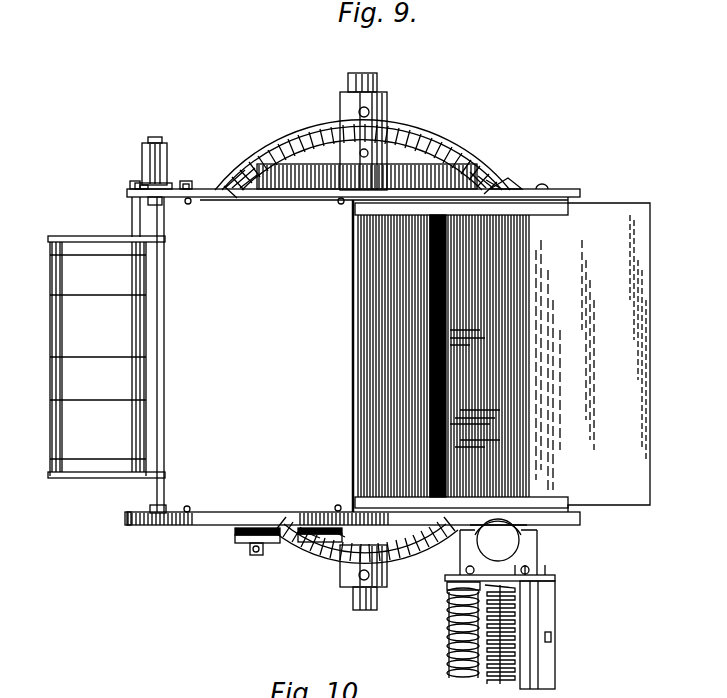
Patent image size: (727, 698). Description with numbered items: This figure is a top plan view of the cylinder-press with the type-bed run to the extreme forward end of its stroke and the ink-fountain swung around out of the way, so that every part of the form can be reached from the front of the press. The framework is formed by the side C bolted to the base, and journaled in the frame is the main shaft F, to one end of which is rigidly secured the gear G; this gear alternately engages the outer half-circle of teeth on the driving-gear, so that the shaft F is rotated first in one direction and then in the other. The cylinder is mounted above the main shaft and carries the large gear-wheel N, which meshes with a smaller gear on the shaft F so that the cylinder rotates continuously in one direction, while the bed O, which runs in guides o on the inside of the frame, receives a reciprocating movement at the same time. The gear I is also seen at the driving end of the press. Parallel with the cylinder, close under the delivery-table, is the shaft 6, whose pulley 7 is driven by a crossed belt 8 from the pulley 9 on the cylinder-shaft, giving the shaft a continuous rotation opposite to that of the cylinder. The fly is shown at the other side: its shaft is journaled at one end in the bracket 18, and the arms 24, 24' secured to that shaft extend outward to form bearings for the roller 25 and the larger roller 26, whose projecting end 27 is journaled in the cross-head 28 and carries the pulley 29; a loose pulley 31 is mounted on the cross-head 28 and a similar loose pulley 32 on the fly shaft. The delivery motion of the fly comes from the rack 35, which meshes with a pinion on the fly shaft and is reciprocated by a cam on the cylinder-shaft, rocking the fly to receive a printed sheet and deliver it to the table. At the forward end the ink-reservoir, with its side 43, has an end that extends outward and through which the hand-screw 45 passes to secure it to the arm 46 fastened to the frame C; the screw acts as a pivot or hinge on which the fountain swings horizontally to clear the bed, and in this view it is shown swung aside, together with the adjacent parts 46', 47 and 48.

The side C is at (572, 197).
The bed O is at (612, 337).
The main shaft F is at (456, 356).
The guide o is at (544, 205).
The gear segment I is at (323, 150).
The gear G is at (418, 165).
The gear-wheel N is at (455, 172).
The bracket 46' is at (512, 166).
The stud 47 is at (540, 189).
The bracket 18 is at (166, 163).
The pulley 29 is at (126, 178).
The loose pulley 32 is at (160, 186).
The loose pulley 31 is at (196, 182).
The cross-head 28 is at (193, 186).
The projecting end 27 is at (147, 217).
The arm 24' is at (106, 227).
The arm 24 is at (98, 371).
The roller 25 is at (98, 306).
The roller 26 is at (106, 439).
The rack 35 is at (150, 525).
The side 43 is at (167, 527).
The pulley 7 is at (236, 540).
The shaft 6 is at (256, 556).
The crossed belt 8 is at (300, 541).
The pulley 9 is at (340, 552).
The hand-screw 45 is at (498, 540).
The arm 46 is at (510, 553).
The spring 48 is at (445, 622).